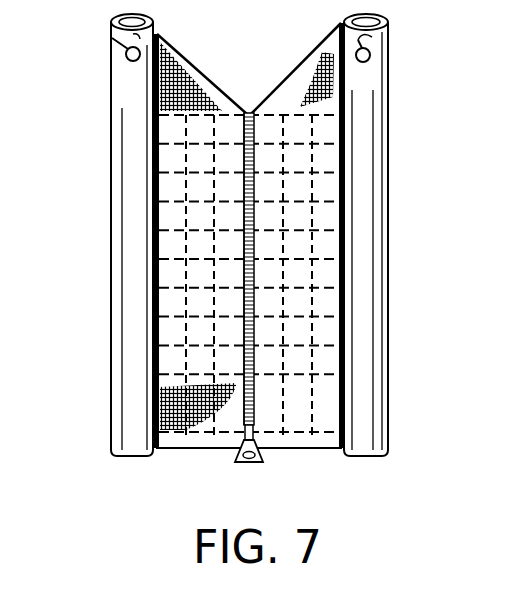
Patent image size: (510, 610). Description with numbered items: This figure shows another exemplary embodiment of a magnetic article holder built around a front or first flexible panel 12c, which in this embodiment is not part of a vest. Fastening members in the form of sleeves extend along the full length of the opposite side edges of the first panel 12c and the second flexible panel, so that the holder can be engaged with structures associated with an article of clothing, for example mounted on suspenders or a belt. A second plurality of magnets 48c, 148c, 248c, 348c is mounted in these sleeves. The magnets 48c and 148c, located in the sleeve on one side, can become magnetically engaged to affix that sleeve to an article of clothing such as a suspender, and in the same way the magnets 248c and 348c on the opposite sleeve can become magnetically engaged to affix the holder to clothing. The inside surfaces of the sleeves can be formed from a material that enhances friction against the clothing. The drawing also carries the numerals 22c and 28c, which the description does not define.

The first roller post 48c is at (110, 37).
The first ring 148c is at (126, 59).
The second roller post 248c is at (372, 37).
The second ring 348c is at (368, 62).
The net 12c is at (282, 90).
The first zipper portion 22c is at (262, 410).
The second zipper portion 28c is at (233, 428).